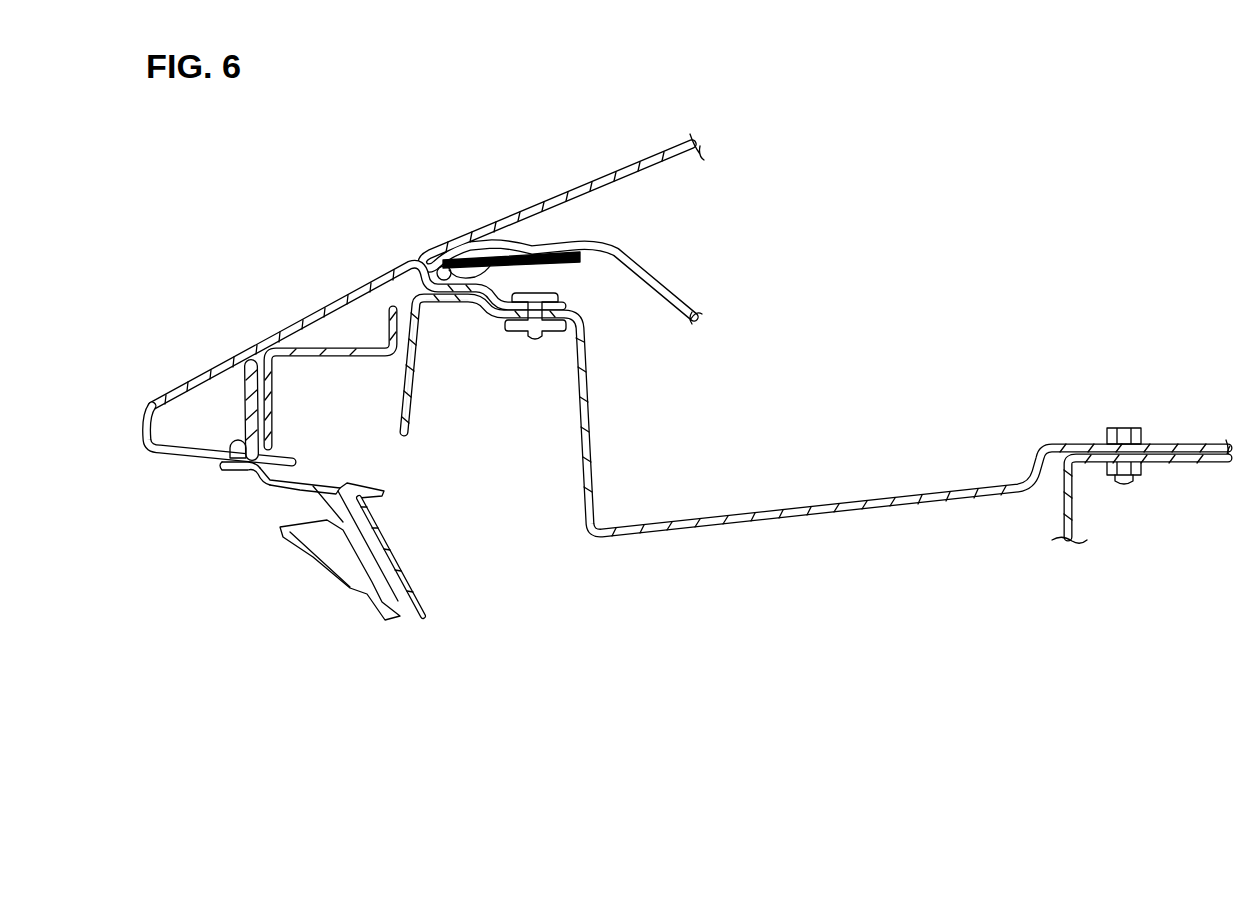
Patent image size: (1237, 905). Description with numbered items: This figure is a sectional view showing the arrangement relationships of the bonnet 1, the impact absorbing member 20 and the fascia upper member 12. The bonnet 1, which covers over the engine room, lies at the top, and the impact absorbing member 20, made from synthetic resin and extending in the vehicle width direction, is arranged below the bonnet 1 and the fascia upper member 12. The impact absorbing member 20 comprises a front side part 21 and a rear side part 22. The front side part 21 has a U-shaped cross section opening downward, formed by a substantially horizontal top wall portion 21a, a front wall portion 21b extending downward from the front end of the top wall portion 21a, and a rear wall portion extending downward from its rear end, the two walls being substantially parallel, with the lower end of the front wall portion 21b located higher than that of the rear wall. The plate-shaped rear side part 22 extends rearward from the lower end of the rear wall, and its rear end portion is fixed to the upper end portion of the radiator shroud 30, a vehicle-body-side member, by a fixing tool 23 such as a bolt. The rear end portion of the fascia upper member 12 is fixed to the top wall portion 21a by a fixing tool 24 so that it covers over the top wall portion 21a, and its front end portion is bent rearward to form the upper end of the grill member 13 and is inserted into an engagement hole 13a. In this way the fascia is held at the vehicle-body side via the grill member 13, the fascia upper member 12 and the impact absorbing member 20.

The bonnet 1 is at (580, 185).
The fascia upper member 12 is at (263, 328).
The grill member 13 is at (330, 553).
The engagement hole 13a is at (227, 472).
The impact absorbing member 20 is at (816, 442).
The front side part 21 is at (816, 409).
The top wall portion 21a is at (453, 304).
The front wall portion 21b is at (406, 432).
The rear side part 22 is at (837, 507).
The fixing tool 23 is at (1120, 430).
The fixing tool 24 is at (530, 338).
The radiator shroud 30 is at (1063, 503).